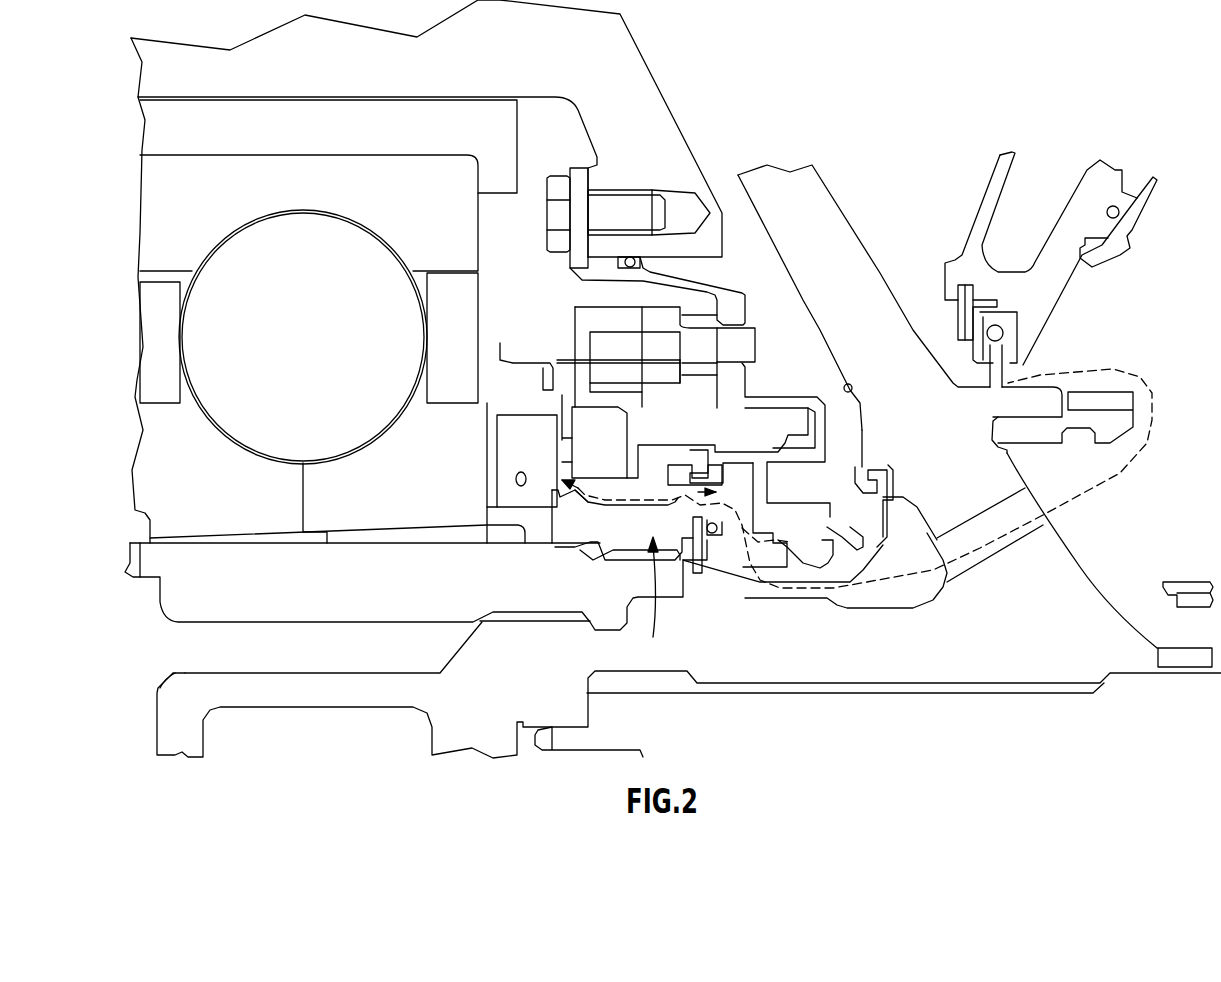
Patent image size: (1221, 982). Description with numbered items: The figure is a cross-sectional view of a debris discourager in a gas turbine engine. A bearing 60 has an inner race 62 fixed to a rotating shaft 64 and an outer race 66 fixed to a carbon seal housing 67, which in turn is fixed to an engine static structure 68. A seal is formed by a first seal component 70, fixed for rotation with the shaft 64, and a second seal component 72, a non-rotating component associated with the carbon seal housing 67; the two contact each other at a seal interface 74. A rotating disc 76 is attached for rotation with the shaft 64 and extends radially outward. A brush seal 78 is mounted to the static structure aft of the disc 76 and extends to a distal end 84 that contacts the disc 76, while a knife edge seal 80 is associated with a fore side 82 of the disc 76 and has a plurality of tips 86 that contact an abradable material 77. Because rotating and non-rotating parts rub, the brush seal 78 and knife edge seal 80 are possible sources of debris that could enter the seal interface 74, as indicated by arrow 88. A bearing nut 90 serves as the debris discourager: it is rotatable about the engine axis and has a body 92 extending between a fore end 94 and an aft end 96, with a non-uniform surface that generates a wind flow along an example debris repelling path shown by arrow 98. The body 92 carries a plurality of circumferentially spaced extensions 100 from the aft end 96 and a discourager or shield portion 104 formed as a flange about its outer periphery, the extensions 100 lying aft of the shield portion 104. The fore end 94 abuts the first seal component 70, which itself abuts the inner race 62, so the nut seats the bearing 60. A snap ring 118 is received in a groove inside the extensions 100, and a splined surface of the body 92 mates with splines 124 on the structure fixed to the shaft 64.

The bearing 60 is at (208, 338).
The inner race 62 is at (453, 435).
The rotating shaft 64 is at (218, 690).
The outer race 66 is at (373, 185).
The carbon seal housing 67 is at (578, 173).
The engine static structure 68 is at (633, 107).
The first seal component 70 is at (508, 453).
The second seal component 72 is at (610, 430).
The seal interface 74 is at (558, 447).
The rotating disc 76 is at (828, 247).
The abradable material 77 is at (860, 540).
The brush seal 78 is at (1023, 366).
The knife edge seal 80 is at (842, 520).
The fore side 82 is at (853, 388).
The distal end 84 is at (993, 390).
The tips 86 is at (826, 540).
The arrow 88 is at (617, 502).
The bearing nut 90 is at (653, 637).
The body 92 is at (588, 537).
The fore end 94 is at (533, 540).
The aft end 96 is at (738, 572).
The arrow 98 is at (737, 565).
The extensions 100 is at (712, 515).
The shield portion 104 is at (692, 502).
The snap ring 118 is at (715, 568).
The splines 124 is at (623, 553).